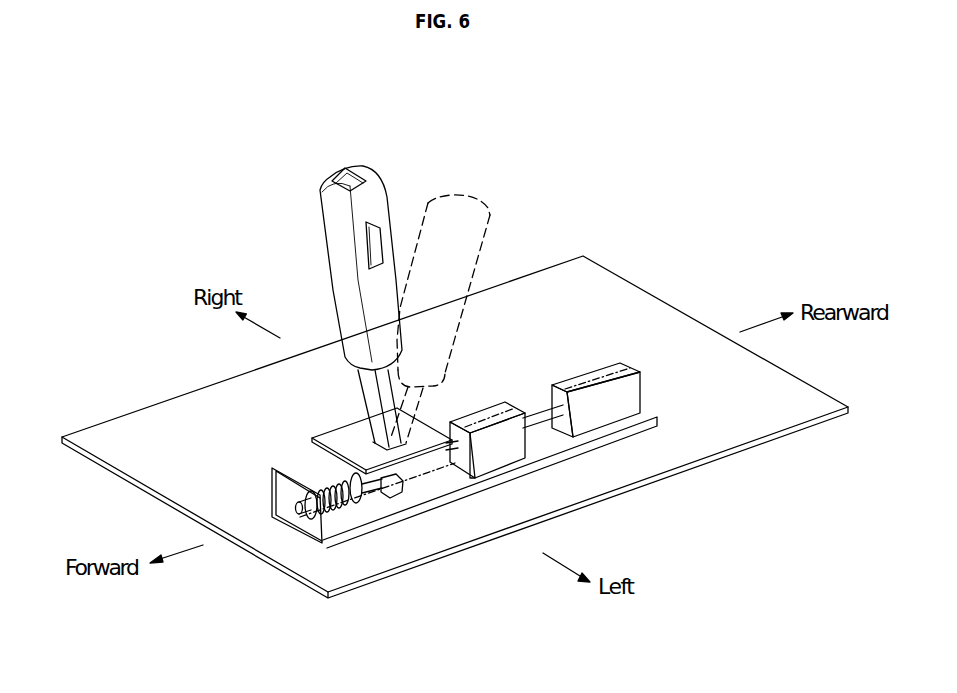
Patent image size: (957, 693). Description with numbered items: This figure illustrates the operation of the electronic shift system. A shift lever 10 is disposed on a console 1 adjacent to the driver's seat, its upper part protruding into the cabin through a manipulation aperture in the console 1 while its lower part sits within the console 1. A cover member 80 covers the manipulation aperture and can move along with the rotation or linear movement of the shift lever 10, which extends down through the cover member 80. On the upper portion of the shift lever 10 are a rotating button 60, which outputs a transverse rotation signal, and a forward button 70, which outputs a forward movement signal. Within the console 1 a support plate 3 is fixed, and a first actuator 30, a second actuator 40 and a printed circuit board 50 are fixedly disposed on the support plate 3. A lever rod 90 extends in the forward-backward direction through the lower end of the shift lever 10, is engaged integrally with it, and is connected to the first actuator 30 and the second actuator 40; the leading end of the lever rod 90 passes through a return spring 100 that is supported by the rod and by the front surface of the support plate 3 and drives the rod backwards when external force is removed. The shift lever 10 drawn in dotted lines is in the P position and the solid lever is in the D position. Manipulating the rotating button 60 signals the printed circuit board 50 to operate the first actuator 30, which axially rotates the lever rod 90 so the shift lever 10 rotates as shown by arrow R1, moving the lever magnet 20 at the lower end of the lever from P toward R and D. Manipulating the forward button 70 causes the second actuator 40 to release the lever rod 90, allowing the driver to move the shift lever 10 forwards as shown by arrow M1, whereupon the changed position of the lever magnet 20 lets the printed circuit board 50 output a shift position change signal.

The console 1 is at (642, 305).
The support plate 3 is at (440, 494).
The shift lever 10 is at (332, 207).
The lever magnet 20 is at (386, 490).
The first actuator 30 is at (493, 458).
The second actuator 40 is at (608, 416).
The printed circuit board 50 is at (348, 497).
The rotating button 60 is at (376, 248).
The forward button 70 is at (349, 177).
The cover member 80 is at (332, 438).
The lever rod 90 is at (540, 428).
The return spring 100 is at (322, 525).
The rotation arrow R1 is at (477, 187).
The forward movement arrow M1 is at (320, 249).